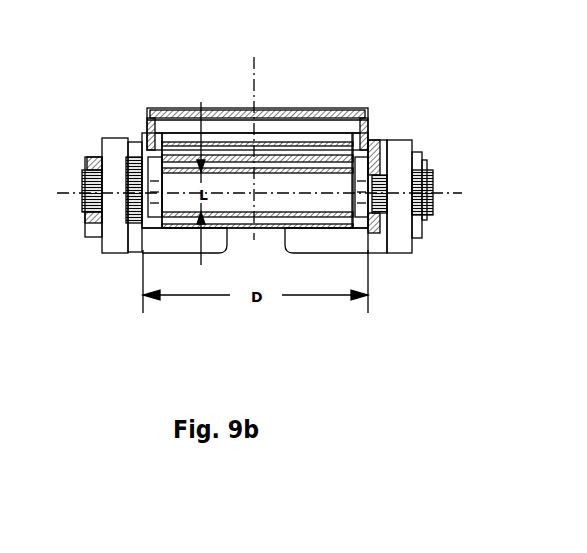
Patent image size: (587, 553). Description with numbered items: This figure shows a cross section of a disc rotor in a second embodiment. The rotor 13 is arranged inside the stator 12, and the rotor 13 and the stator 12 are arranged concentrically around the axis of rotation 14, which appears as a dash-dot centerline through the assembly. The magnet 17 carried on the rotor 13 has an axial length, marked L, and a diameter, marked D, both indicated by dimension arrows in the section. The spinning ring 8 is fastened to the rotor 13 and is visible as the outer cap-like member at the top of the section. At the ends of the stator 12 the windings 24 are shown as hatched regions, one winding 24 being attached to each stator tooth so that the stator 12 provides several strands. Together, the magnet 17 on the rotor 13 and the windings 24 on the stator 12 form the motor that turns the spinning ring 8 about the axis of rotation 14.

The spinning ring 8 is at (175, 112).
The stator 12 is at (92, 227).
The rotor 13 is at (309, 193).
The axis of rotation 14 is at (255, 85).
The magnet 17 is at (358, 205).
The winding 24 is at (83, 175).